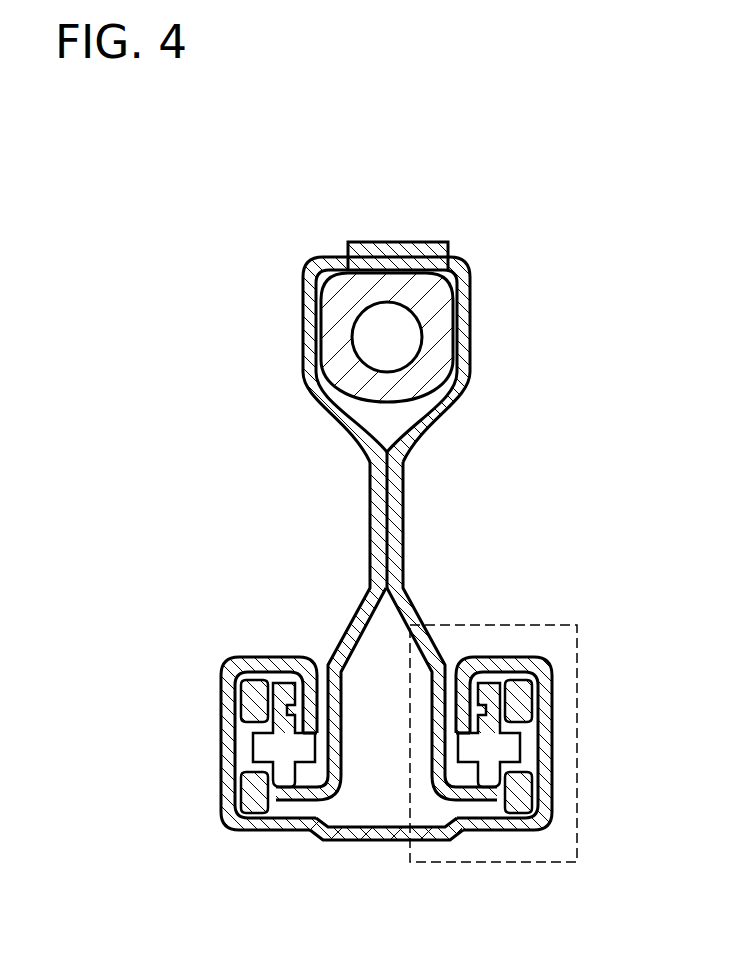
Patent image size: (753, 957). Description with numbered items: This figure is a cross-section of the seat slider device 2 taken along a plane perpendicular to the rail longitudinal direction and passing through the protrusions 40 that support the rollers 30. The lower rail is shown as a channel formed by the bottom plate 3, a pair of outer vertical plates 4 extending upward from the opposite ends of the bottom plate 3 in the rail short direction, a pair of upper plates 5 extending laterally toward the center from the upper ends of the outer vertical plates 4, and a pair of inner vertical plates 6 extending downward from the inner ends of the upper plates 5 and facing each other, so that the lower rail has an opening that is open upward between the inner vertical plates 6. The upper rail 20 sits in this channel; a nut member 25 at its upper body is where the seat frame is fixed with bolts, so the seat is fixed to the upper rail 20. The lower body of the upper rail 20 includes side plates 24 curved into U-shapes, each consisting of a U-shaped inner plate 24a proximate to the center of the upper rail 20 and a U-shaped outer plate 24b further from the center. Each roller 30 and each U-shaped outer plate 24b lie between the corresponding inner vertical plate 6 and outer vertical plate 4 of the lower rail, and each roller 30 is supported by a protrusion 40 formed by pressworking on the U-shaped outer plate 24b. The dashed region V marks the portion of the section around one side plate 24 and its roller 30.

The seat slider device 2 is at (140, 264).
The upper rail 20 is at (386, 242).
The nut member 25 is at (442, 328).
The side plate 24 is at (386, 631).
The U-shaped inner plate 24a is at (315, 680).
The U-shaped outer plate 24b is at (358, 567).
The upper plate 5 is at (240, 660).
The roller 30 is at (253, 700).
The protrusion 40 is at (255, 748).
The outer vertical plate 4 is at (218, 795).
The inner vertical plate 6 is at (445, 787).
The bottom plate 3 is at (478, 830).
The enlarged view region V is at (577, 838).